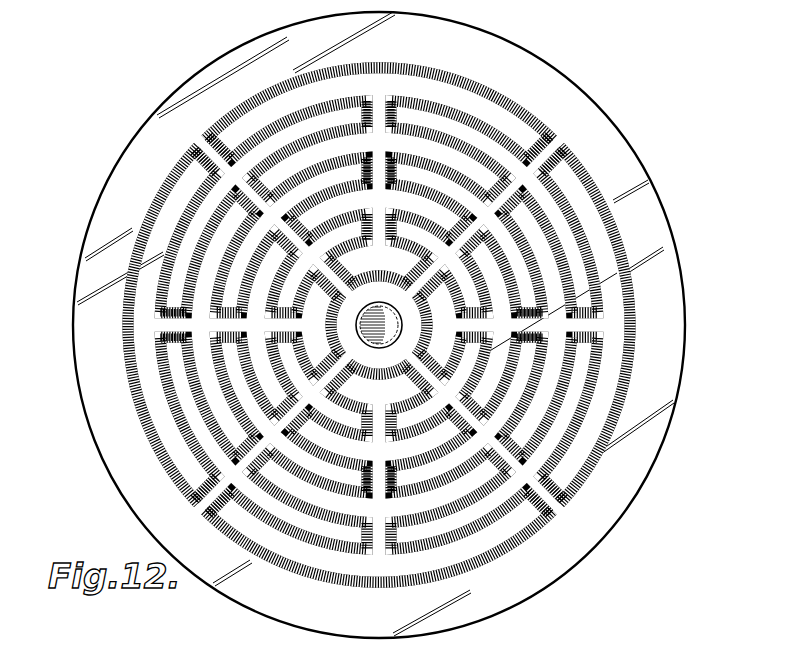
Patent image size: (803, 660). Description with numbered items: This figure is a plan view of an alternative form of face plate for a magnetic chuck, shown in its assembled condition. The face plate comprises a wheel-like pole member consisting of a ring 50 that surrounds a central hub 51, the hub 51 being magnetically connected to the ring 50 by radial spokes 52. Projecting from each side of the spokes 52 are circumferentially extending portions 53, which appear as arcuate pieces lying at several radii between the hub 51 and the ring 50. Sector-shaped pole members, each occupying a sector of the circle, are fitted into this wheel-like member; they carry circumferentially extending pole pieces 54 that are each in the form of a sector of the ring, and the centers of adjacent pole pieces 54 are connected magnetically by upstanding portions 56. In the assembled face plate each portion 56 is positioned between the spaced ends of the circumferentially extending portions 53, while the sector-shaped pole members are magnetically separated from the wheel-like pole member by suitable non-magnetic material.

The ring 50 is at (603, 133).
The hub 51 is at (395, 323).
The spokes 52 is at (216, 160).
The circumferentially extending portions 53 is at (400, 172).
The circumferentially extending pole pieces 54 is at (172, 205).
The connecting portions 56 is at (162, 323).